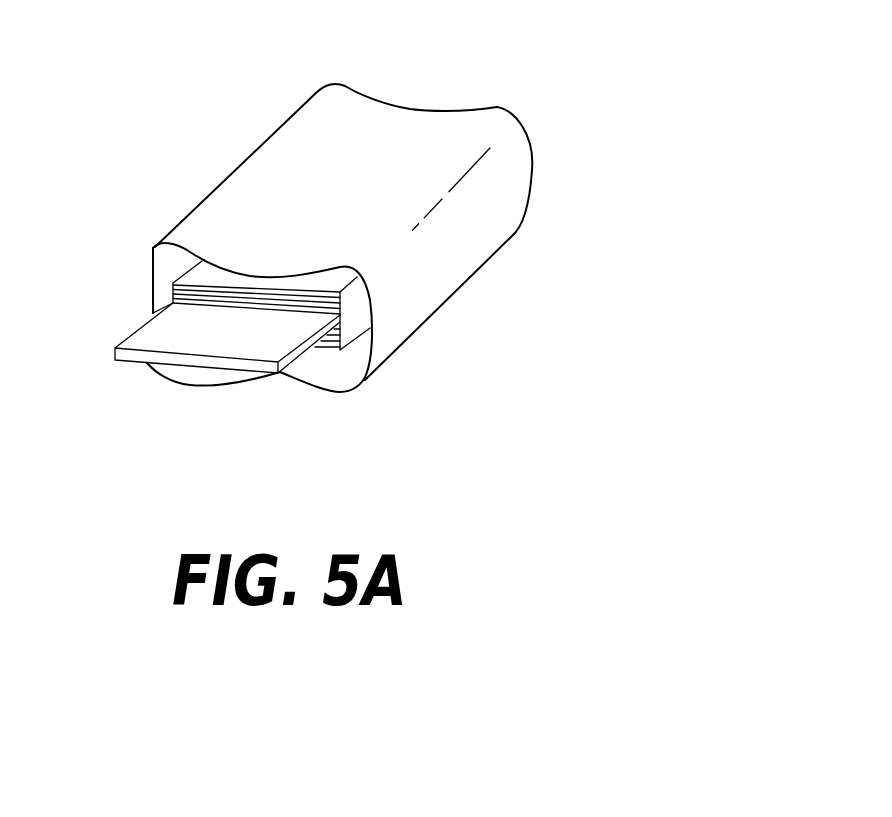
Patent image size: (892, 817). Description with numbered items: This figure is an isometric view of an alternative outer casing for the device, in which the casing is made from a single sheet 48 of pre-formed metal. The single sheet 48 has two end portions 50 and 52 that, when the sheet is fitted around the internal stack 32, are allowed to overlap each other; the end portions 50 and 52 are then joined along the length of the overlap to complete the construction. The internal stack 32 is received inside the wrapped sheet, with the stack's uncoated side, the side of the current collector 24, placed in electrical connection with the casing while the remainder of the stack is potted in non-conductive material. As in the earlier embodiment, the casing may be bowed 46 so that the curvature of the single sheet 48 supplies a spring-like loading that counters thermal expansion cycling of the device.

The current collector 24 is at (123, 337).
The internal stack 32 is at (357, 317).
The bowed portion 46 is at (410, 108).
The single sheet 48 is at (361, 198).
The end portion 50 is at (153, 270).
The end portion 52 is at (150, 365).